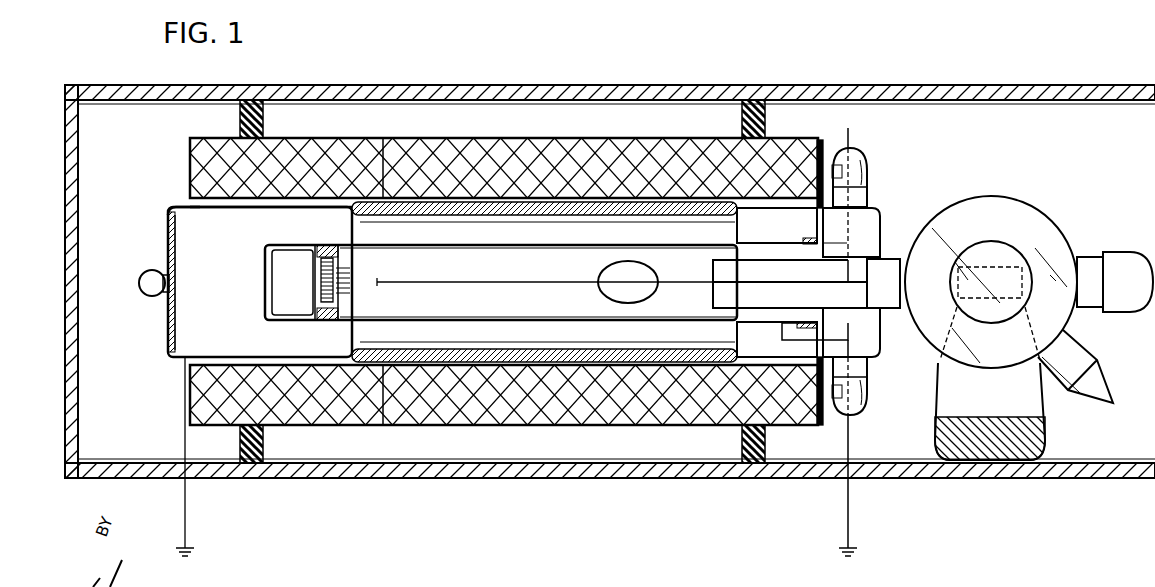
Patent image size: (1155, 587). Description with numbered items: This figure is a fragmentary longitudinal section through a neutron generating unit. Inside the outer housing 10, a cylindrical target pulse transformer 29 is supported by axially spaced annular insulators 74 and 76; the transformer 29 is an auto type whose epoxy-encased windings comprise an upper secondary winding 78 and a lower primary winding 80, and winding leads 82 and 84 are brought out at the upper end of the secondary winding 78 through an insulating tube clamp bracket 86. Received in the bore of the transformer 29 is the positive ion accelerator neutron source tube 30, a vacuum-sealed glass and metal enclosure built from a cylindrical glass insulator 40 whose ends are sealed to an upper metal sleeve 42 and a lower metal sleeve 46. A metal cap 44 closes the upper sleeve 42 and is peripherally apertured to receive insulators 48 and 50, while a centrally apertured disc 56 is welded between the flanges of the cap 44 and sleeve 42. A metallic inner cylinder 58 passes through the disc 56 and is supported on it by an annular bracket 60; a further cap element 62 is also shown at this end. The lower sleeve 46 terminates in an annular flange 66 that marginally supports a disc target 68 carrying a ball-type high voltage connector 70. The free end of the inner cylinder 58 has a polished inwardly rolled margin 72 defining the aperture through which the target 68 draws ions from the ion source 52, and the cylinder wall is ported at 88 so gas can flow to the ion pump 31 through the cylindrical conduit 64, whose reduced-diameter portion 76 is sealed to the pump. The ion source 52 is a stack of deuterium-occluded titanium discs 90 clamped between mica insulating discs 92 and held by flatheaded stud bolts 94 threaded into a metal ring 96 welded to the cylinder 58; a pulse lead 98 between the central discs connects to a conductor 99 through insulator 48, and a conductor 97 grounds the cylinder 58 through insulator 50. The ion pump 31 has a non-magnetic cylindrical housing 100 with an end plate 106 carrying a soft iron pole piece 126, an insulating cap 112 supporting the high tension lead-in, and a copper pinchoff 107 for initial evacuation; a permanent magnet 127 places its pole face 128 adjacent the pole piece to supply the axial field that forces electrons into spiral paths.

The housing 10 is at (575, 97).
The target pulse transformer 29 is at (325, 136).
The positive ion accelerator neutron source tube 30 is at (176, 197).
The ion pump 31 is at (1024, 200).
The cylindrical glass insulator 40 is at (628, 212).
The upper metal sleeve 42 is at (772, 210).
The metal cap 44 is at (874, 207).
The lower metal sleeve 46 is at (265, 208).
The insulator 48 is at (863, 160).
The insulator 50 is at (868, 396).
The ion source 52 is at (314, 303).
The centrally apertured disc 56 is at (820, 228).
The metallic inner cylinder 58 is at (470, 246).
The annular bracket 60 is at (806, 240).
The end cap 62 is at (750, 322).
The cylindrical conduit 64 is at (800, 262).
The annular flange 66 is at (169, 208).
The disc target 68 is at (178, 241).
The high voltage connector 70 is at (149, 274).
The inwardly rolled margin 72 is at (266, 298).
The annular insulator 74 is at (263, 455).
The annular insulator / smaller diameter conduit portion 76 is at (742, 444).
The secondary winding 78 is at (497, 152).
The primary winding 80 is at (278, 152).
The winding lead 82 is at (833, 165).
The winding lead 84 is at (832, 385).
The insulating tube clamp bracket 86 is at (823, 140).
The port 88 is at (615, 272).
The titanium discs 90 is at (321, 275).
The mica insulating discs 92 is at (348, 273).
The flatheaded stud bolts 94 is at (318, 320).
The metal ring 96 is at (335, 244).
The conductor 97 is at (848, 340).
The pulse lead 98 is at (373, 283).
The conductor 99 is at (455, 281).
The cylindrical housing 100 is at (993, 192).
The end plate 106 is at (1047, 236).
The copper pinchoff 107 is at (1093, 378).
The insulating cap 112 is at (1118, 257).
The pole piece 126 is at (955, 258).
The permanent magnet 127 is at (1047, 448).
The pole face 128 is at (1000, 277).